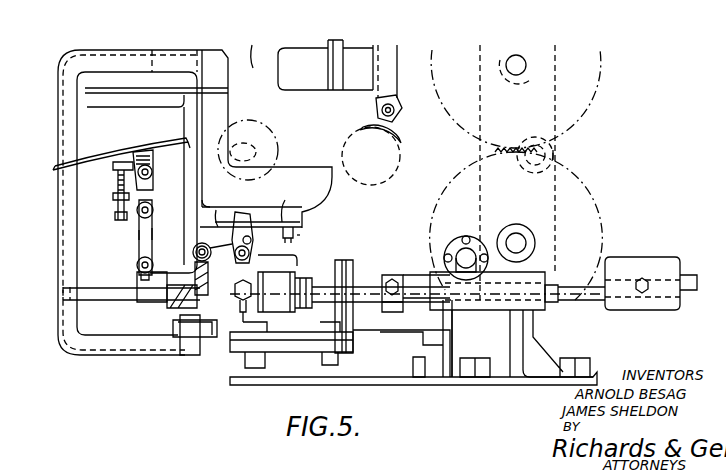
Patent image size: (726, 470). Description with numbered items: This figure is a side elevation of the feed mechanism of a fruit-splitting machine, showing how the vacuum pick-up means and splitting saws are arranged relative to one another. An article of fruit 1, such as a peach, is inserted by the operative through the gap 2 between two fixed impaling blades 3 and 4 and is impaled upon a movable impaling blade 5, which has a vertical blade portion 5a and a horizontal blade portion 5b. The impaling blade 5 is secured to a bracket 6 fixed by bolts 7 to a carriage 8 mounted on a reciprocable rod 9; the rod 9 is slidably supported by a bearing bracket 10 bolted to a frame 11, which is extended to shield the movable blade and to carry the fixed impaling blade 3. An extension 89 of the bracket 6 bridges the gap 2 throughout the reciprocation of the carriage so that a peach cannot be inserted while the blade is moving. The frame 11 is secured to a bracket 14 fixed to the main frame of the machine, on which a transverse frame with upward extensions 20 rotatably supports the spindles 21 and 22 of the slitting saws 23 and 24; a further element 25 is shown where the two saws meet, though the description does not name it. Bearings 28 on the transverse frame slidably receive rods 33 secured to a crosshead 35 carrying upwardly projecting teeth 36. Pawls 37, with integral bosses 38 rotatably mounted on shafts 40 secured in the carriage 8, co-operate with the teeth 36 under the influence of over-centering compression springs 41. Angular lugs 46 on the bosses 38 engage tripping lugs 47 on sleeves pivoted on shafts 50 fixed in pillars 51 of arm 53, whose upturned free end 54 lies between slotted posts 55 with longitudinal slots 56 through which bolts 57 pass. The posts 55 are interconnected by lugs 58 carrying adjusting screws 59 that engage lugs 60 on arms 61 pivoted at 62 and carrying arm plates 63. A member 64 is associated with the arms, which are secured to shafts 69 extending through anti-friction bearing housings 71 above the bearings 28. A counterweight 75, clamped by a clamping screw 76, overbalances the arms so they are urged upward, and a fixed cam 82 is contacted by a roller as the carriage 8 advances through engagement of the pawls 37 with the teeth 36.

The article of fruit 1 is at (262, 140).
The gap 2 is at (253, 42).
The fixed impaling blade 3 is at (232, 55).
The fixed impaling blade 4 is at (278, 67).
The movable impaling blade 5 is at (312, 190).
The vertical blade portion 5a is at (230, 108).
The horizontal blade portion 5b is at (347, 115).
The bracket 6 is at (187, 118).
The bolts 7 is at (312, 236).
The carriage 8 is at (298, 233).
The reciprocable rod 9 is at (122, 300).
The bearing bracket 10 is at (193, 340).
The frame 11 is at (112, 52).
The bracket 14 is at (396, 385).
The upward extensions 20 is at (558, 206).
The spindle 21 is at (527, 243).
The spindle 22 is at (519, 72).
The slitting saw 23 is at (600, 86).
The slitting saw 24 is at (600, 220).
The gear 25 is at (556, 158).
The bearing 28 is at (470, 318).
The rod 33 is at (553, 305).
The crosshead 35 is at (300, 332).
The teeth 36 is at (258, 362).
The pawl 37 is at (297, 264).
The sleeve or boss 38 is at (291, 199).
The shaft 40 is at (250, 253).
The over-centering compression spring 41 is at (254, 220).
The angular lug 46 is at (212, 274).
The tripping lug 47 is at (211, 248).
The shaft 50 is at (195, 256).
The pillar 51 is at (173, 308).
The arm 53 is at (155, 302).
The free end 54 is at (139, 246).
The slotted post 55 is at (153, 228).
The longitudinal slot 56 is at (139, 230).
The bolt 57 is at (153, 208).
The lug 58 is at (113, 195).
The adjusting screw 59 is at (115, 212).
The lug 60 is at (113, 168).
The arm 61 is at (153, 155).
The pivot 62 is at (152, 172).
The arm plate 63 is at (121, 150).
The member 64 is at (392, 312).
The shaft 69 is at (460, 248).
The bearing housing 71 is at (468, 236).
The counterweight 75 is at (652, 262).
The clamping screw 76 is at (646, 292).
The fixed cam 82 is at (353, 266).
The extension 89 is at (86, 97).